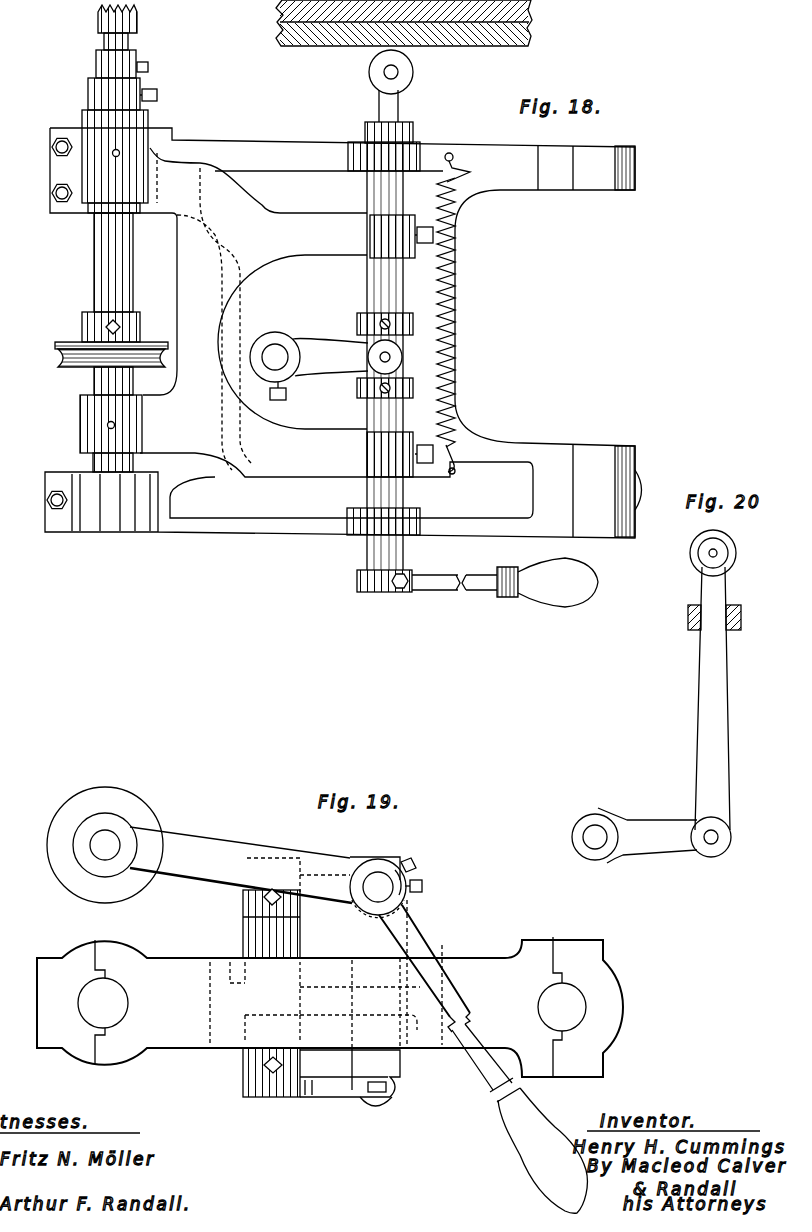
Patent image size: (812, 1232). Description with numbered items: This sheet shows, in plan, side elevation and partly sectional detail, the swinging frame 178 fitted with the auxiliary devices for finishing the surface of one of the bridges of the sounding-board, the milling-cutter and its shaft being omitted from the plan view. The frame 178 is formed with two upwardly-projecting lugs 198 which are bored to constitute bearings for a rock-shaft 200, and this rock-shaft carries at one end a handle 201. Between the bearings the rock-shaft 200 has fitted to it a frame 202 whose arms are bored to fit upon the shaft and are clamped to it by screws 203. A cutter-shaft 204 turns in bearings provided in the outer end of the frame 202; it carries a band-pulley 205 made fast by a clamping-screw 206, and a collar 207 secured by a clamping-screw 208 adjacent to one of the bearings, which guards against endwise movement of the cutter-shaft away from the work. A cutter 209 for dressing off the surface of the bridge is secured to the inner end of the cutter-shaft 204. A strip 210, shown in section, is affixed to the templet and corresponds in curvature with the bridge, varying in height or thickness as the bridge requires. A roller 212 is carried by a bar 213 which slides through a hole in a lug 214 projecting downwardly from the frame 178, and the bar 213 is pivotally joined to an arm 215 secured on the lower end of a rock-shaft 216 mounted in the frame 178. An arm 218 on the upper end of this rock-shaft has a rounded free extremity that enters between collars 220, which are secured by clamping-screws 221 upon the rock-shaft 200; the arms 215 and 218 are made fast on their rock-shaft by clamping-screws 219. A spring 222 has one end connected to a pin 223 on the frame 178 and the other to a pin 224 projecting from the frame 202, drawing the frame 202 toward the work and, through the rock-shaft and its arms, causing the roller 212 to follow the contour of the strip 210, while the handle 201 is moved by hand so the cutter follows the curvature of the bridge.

In FIG. 18, the frame 178 is at (343, 333).
In FIG. 19, the frame 178 is at (330, 995).
In FIG. 18, the lugs 198 is at (360, 165).
In FIG. 18, the rock-shaft 200 is at (369, 277).
In FIG. 19, the rock-shaft 200 is at (385, 886).
In FIG. 18, the handle 201 is at (448, 593).
In FIG. 19, the handle 201 is at (417, 930).
In FIG. 18, the frame 202 is at (282, 288).
In FIG. 19, the frame 202 is at (241, 865).
In FIG. 18, the screws 203 is at (434, 236).
In FIG. 19, the screws 203 is at (422, 888).
In FIG. 18, the cutter-shaft 204 is at (95, 279).
In FIG. 19, the cutter-shaft 204 is at (108, 845).
In FIG. 18, the band-pulley 205 is at (62, 360).
In FIG. 19, the band-pulley 205 is at (105, 845).
In FIG. 18, the clamping-screw 206 is at (106, 323).
In FIG. 18, the collar 207 is at (88, 98).
In FIG. 18, the clamping-screw 208 is at (158, 95).
In FIG. 18, the cutter 209 is at (138, 19).
In FIG. 18, the strip 210 is at (282, 47).
In FIG. 18, the roller 212 is at (370, 76).
In FIG. 20, the roller 212 is at (693, 560).
In FIG. 18, the bar 213 is at (404, 98).
In FIG. 20, the bar 213 is at (706, 707).
In FIG. 20, the lug 214 is at (688, 618).
In FIG. 19, the lug 214 is at (390, 1100).
In FIG. 20, the arm 215 is at (664, 835).
In FIG. 19, the arm 215 is at (330, 1092).
In FIG. 18, the rock-shaft 216 is at (275, 350).
In FIG. 20, the rock-shaft 216 is at (585, 835).
In FIG. 18, the arm 218 is at (347, 358).
In FIG. 19, the arm 218 is at (349, 858).
In FIG. 18, the clamping-screws 219 is at (288, 404).
In FIG. 19, the clamping-screws 219 is at (262, 897).
In FIG. 18, the collars 220 is at (416, 322).
In FIG. 18, the clamping-screws 221 is at (357, 323).
In FIG. 18, the spring 222 is at (456, 300).
In FIG. 18, the pin 223 is at (454, 160).
In FIG. 18, the pin 224 is at (456, 470).